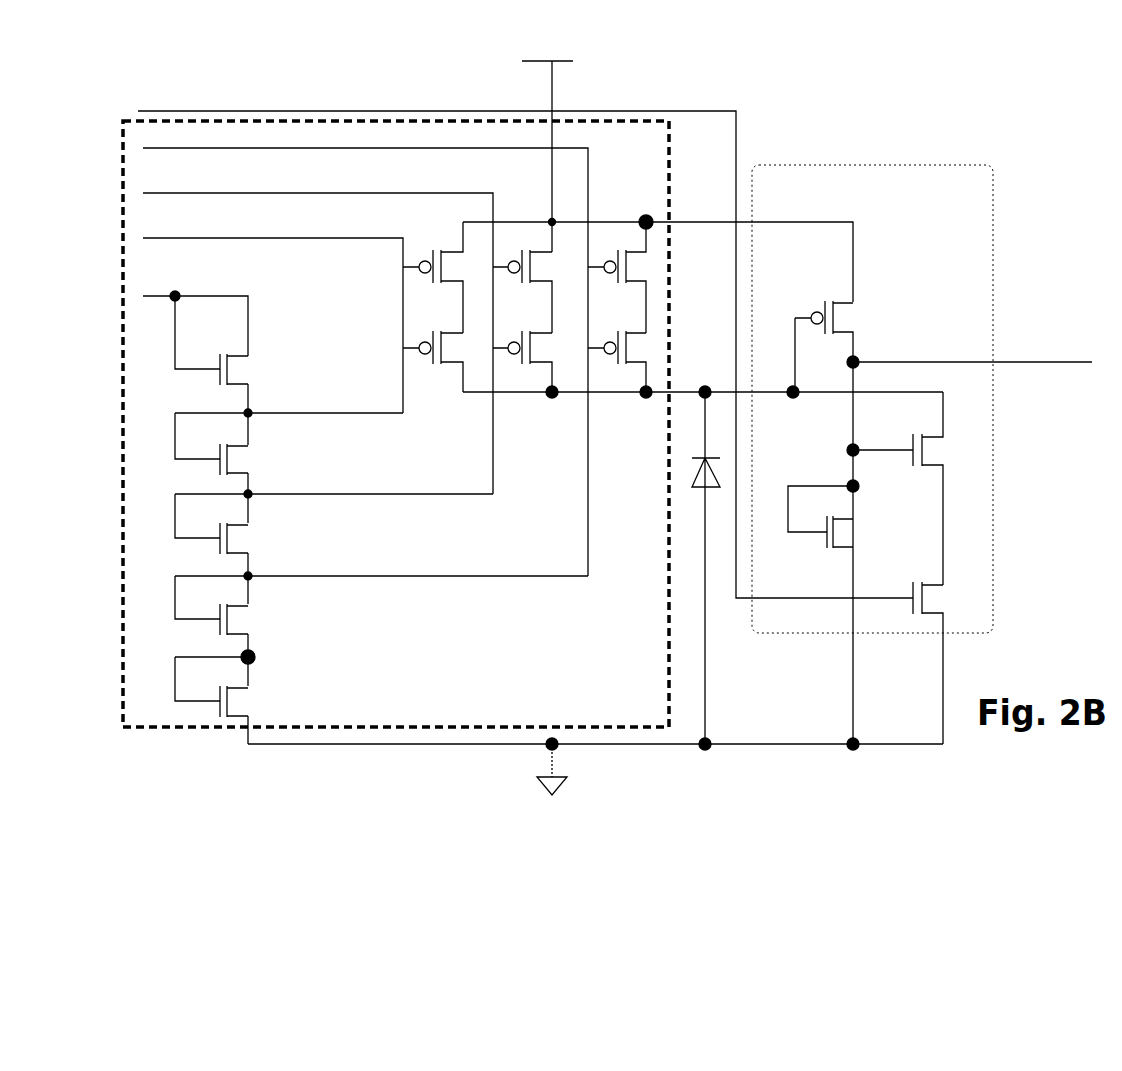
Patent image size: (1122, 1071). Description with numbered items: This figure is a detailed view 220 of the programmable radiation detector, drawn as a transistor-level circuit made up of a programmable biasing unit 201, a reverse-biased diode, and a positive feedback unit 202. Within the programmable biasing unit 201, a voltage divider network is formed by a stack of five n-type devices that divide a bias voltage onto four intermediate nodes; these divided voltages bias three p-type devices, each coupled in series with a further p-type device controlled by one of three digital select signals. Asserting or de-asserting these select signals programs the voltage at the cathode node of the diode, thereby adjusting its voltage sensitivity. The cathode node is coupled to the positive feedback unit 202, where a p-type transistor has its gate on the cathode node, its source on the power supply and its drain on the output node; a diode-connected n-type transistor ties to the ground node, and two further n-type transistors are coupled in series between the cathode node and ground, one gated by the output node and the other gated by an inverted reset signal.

The detailed view 220 is at (183, 54).
The programmable biasing unit 201 is at (600, 121).
The positive feedback unit 202 is at (805, 165).